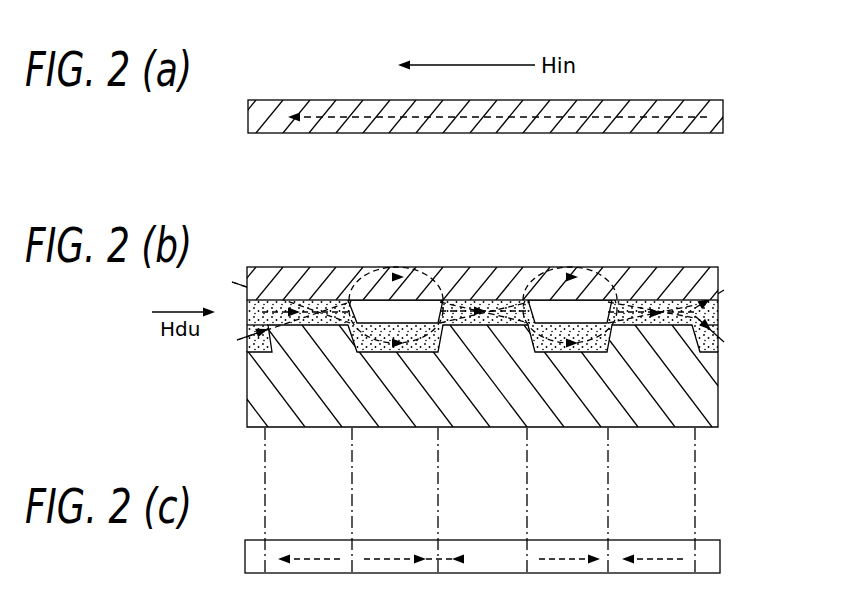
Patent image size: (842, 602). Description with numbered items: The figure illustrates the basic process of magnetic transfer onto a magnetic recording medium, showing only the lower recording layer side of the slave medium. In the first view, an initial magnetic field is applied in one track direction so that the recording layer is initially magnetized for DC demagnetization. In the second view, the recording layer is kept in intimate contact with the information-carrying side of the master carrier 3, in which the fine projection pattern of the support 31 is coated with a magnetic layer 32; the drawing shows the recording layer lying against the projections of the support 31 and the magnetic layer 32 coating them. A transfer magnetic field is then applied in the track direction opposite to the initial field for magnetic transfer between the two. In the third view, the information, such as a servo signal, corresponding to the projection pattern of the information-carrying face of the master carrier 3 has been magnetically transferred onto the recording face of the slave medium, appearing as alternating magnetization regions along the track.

The master carrier 3 is at (714, 394).
The support 31 is at (463, 430).
The magnetic layer 32 is at (503, 301).